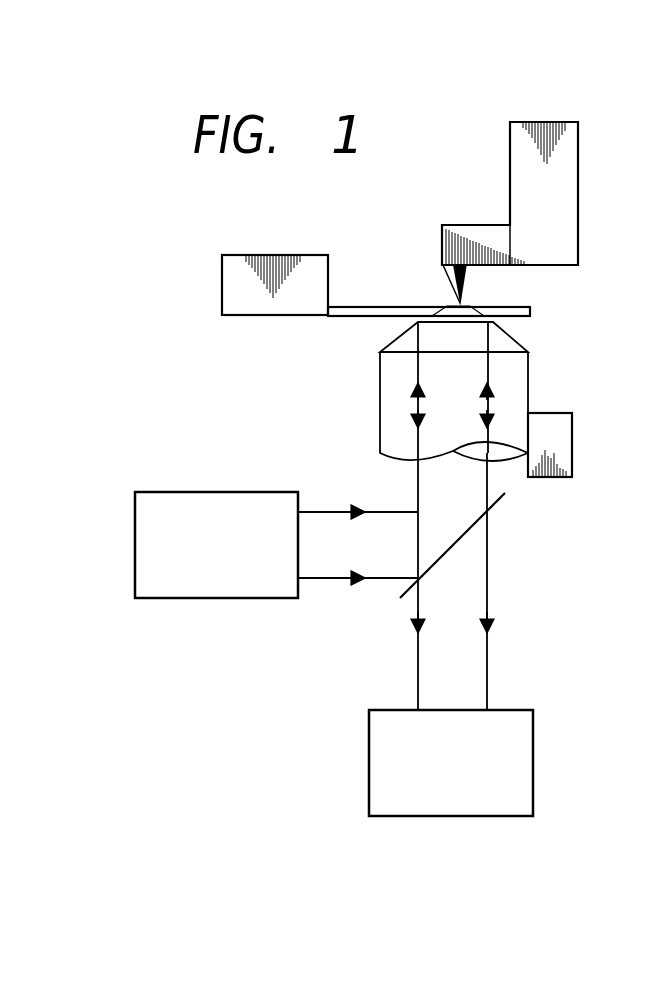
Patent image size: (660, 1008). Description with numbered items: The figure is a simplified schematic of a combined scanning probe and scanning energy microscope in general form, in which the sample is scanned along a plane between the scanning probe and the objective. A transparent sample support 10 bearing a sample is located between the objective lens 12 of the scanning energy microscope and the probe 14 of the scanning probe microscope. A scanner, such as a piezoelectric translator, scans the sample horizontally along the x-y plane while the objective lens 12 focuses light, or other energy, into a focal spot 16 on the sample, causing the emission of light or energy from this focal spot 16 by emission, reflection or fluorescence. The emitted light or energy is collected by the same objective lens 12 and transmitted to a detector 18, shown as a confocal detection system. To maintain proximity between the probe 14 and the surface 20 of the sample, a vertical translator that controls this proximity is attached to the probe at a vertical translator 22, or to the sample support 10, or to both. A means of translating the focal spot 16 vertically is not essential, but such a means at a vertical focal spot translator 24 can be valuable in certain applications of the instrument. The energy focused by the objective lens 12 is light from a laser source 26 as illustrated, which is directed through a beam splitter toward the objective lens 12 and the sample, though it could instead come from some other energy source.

The transparent sample support 10 is at (545, 303).
The objective lens 12 is at (380, 405).
The probe 14 is at (451, 284).
The focal spot 16 is at (468, 298).
The detector 18 is at (534, 763).
The surface of the sample 20 is at (395, 303).
The vertical translator attached to the probe 22 is at (580, 170).
The means for translating the focal spot vertically 24 is at (573, 446).
The laser source 26 is at (218, 492).